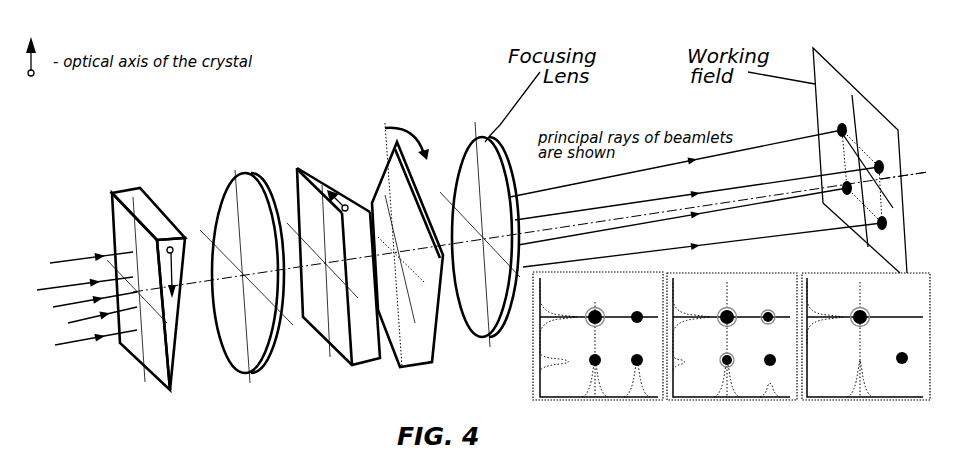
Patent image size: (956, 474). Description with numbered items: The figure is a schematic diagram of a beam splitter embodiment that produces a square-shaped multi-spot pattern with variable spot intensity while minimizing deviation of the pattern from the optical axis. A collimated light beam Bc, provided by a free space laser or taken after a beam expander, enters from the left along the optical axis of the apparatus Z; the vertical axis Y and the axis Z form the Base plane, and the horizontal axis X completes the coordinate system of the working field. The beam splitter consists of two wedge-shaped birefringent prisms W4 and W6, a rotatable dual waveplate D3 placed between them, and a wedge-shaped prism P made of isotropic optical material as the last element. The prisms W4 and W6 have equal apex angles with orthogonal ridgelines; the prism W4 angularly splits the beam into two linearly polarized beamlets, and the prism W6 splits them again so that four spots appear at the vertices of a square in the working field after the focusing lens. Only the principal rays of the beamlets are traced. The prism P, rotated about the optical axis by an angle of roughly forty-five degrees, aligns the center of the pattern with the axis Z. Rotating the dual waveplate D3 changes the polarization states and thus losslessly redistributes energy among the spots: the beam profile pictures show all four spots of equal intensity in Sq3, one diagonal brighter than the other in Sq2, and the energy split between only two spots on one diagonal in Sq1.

The collimated light beam Bc is at (74, 298).
The wedge-shaped birefringent prism W4 is at (122, 190).
The rotatable dual waveplate D3 is at (233, 175).
The wedge-shaped birefringent prism W6 is at (297, 167).
The wedge-shaped prism P is at (437, 185).
The square-shaped multi-spot pattern Sq1 is at (866, 358).
The square-shaped multi-spot pattern Sq2 is at (732, 358).
The square-shaped multi-spot pattern Sq3 is at (598, 357).
The horizontal axis X is at (873, 178).
The vertical axis Y is at (856, 168).
The optical axis of the apparatus Z is at (904, 160).